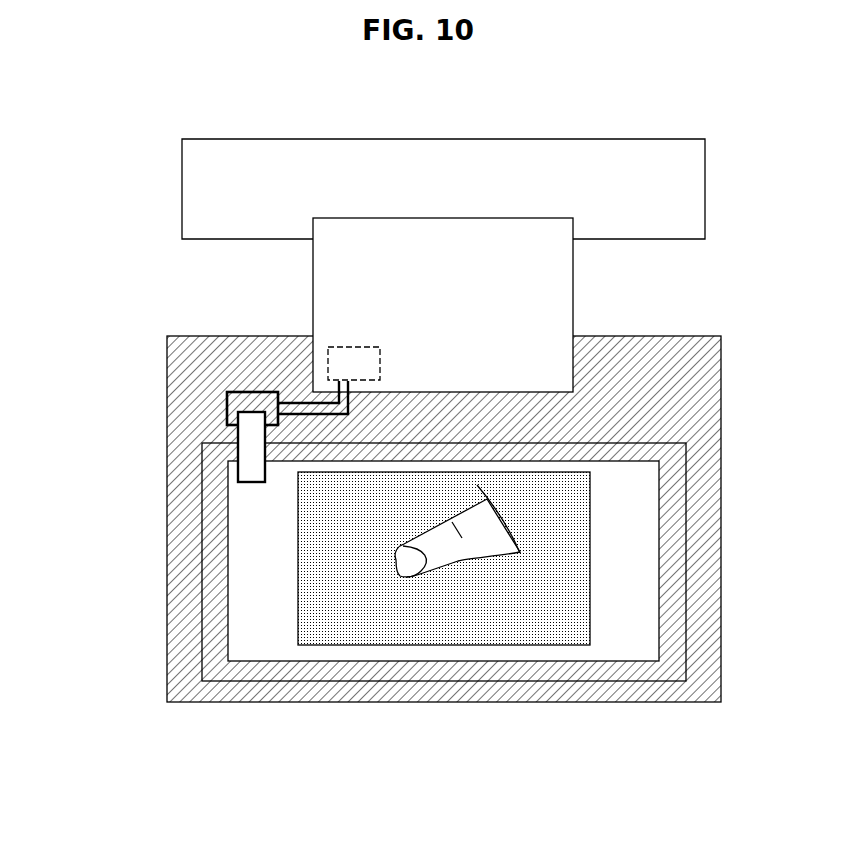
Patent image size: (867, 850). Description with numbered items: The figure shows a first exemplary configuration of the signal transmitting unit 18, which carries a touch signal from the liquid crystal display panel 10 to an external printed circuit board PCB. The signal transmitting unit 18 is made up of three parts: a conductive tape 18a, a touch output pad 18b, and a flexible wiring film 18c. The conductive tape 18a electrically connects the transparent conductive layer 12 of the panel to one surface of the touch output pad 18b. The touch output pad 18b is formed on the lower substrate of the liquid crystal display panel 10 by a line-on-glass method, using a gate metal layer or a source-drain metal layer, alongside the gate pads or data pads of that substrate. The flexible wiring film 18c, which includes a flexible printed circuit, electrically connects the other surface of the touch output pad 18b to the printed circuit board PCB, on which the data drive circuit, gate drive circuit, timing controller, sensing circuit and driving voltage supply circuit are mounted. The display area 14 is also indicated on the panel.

The liquid crystal display panel 10 is at (218, 672).
The transparent conductive layer 12 is at (262, 652).
The display / fingerprint sensing area 14 is at (495, 627).
The signal transmitting unit 18 is at (309, 350).
The conductive tape 18a is at (176, 447).
The touch output pad 18b is at (227, 402).
The flexible wiring film 18c is at (313, 293).
The printed circuit board PCB is at (705, 185).